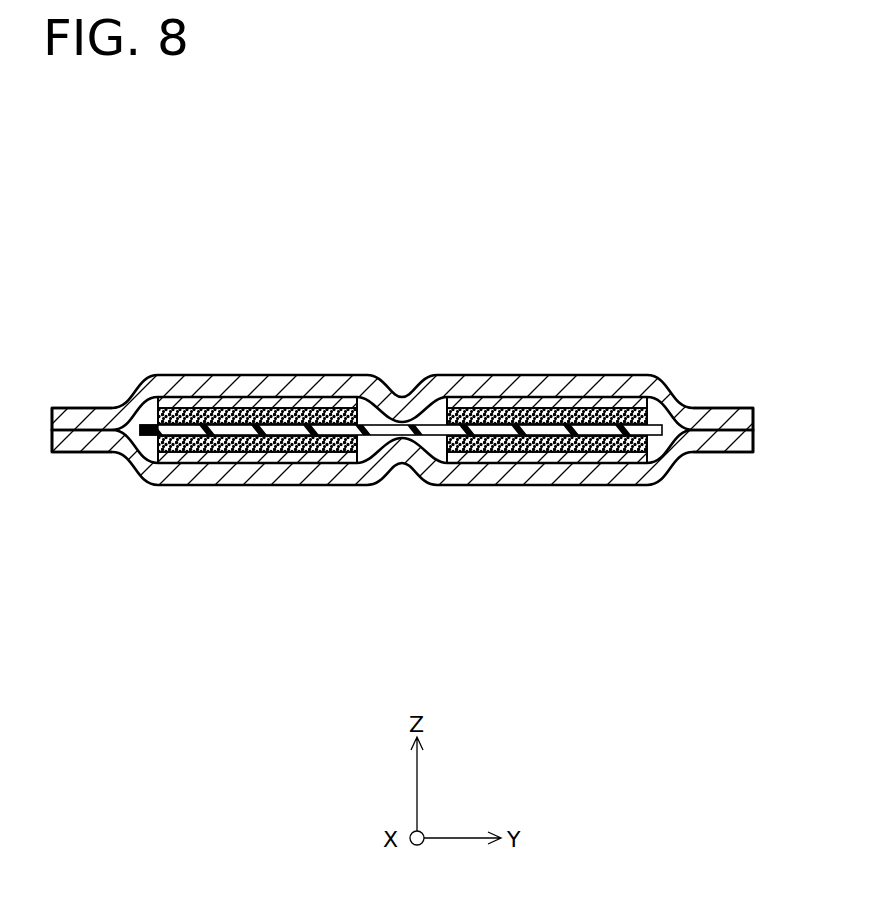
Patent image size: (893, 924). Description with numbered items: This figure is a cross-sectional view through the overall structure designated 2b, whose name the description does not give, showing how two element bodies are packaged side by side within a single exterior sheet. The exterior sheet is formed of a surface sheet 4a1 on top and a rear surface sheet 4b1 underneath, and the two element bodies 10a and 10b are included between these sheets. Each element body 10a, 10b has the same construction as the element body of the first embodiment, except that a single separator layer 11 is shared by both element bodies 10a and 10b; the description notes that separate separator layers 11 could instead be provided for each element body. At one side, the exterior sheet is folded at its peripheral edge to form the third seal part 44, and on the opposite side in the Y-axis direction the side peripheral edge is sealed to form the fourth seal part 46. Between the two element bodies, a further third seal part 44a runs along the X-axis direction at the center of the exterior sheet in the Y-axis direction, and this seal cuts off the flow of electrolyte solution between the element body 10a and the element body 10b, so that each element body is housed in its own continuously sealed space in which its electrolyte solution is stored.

The power storage device 2b is at (402, 411).
The surface sheet 4a1 is at (510, 387).
The rear surface sheet 4b1 is at (255, 472).
The third seal part 44 is at (80, 415).
The fourth seal part 46 is at (717, 416).
The element body 10a is at (588, 440).
The element body 10b is at (206, 444).
The third seal part 44a is at (398, 416).
The separator layer 11 is at (372, 410).